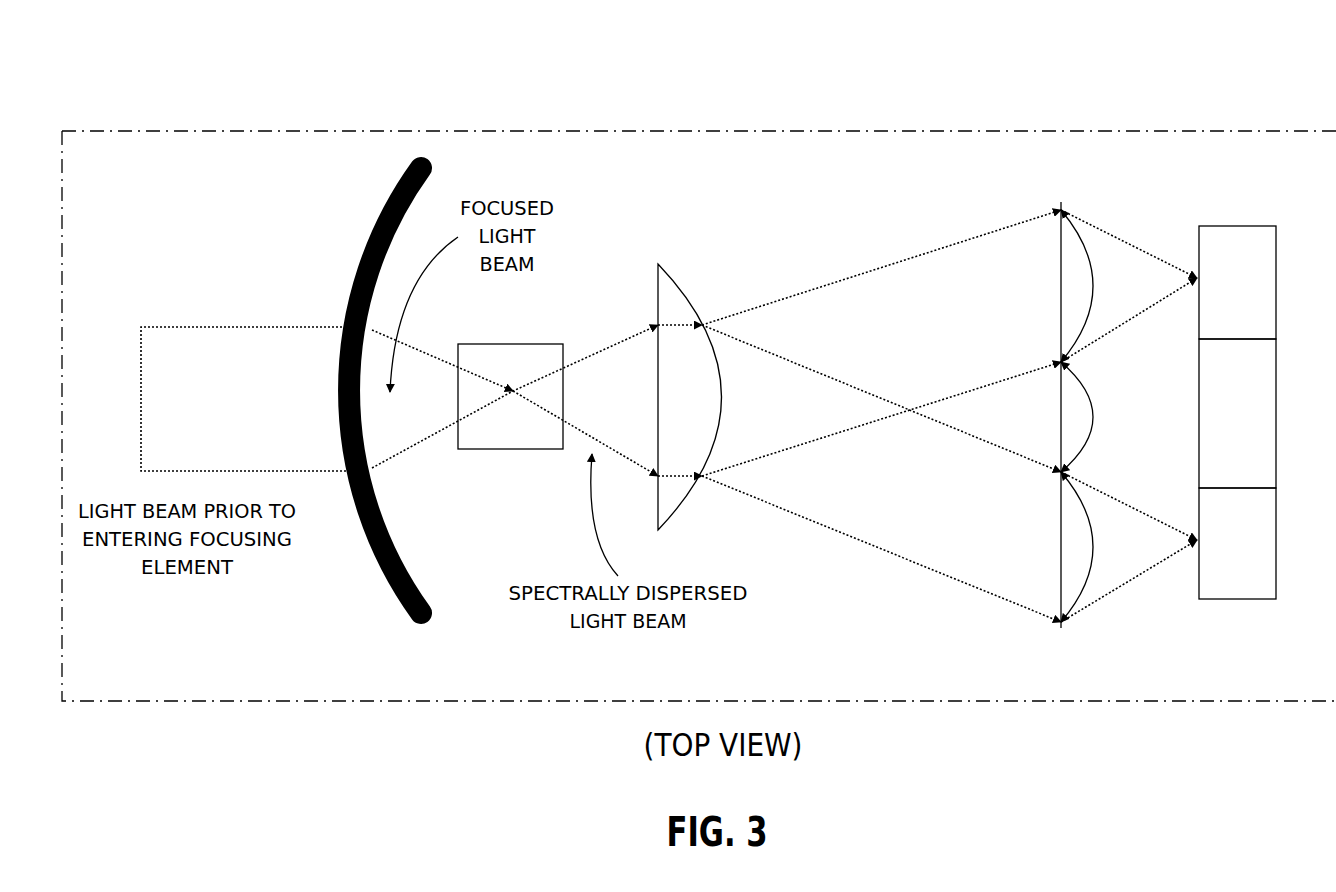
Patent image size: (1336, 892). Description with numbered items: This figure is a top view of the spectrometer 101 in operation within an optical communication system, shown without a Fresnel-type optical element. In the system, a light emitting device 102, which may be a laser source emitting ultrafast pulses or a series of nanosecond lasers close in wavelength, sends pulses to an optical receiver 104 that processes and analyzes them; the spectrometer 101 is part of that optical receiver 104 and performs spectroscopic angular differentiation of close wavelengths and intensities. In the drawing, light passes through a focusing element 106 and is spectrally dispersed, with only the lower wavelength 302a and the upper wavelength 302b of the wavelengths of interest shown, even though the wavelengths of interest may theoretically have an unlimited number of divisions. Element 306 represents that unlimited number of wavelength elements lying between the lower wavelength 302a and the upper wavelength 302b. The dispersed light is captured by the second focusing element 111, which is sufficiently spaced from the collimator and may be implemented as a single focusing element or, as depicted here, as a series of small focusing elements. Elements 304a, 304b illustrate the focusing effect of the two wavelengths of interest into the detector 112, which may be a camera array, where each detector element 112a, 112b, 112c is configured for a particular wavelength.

The spectrometer 101 is at (1148, 62).
The light emitting device 102 is at (405, 180).
The optical receiver 104 is at (505, 343).
The dispersive lens element 106 is at (655, 292).
The second focusing element 111 is at (1060, 195).
The detector 112 is at (1267, 378).
The detector element 112a is at (1216, 292).
The detector element 112b is at (1216, 422).
The detector element 112c is at (1216, 551).
The lower wavelength 302a is at (905, 258).
The upper wavelength 302b is at (900, 560).
The focusing effect element 304a is at (1113, 235).
The focusing effect element 304b is at (1123, 586).
The intermediate wavelength elements 306 is at (1132, 423).